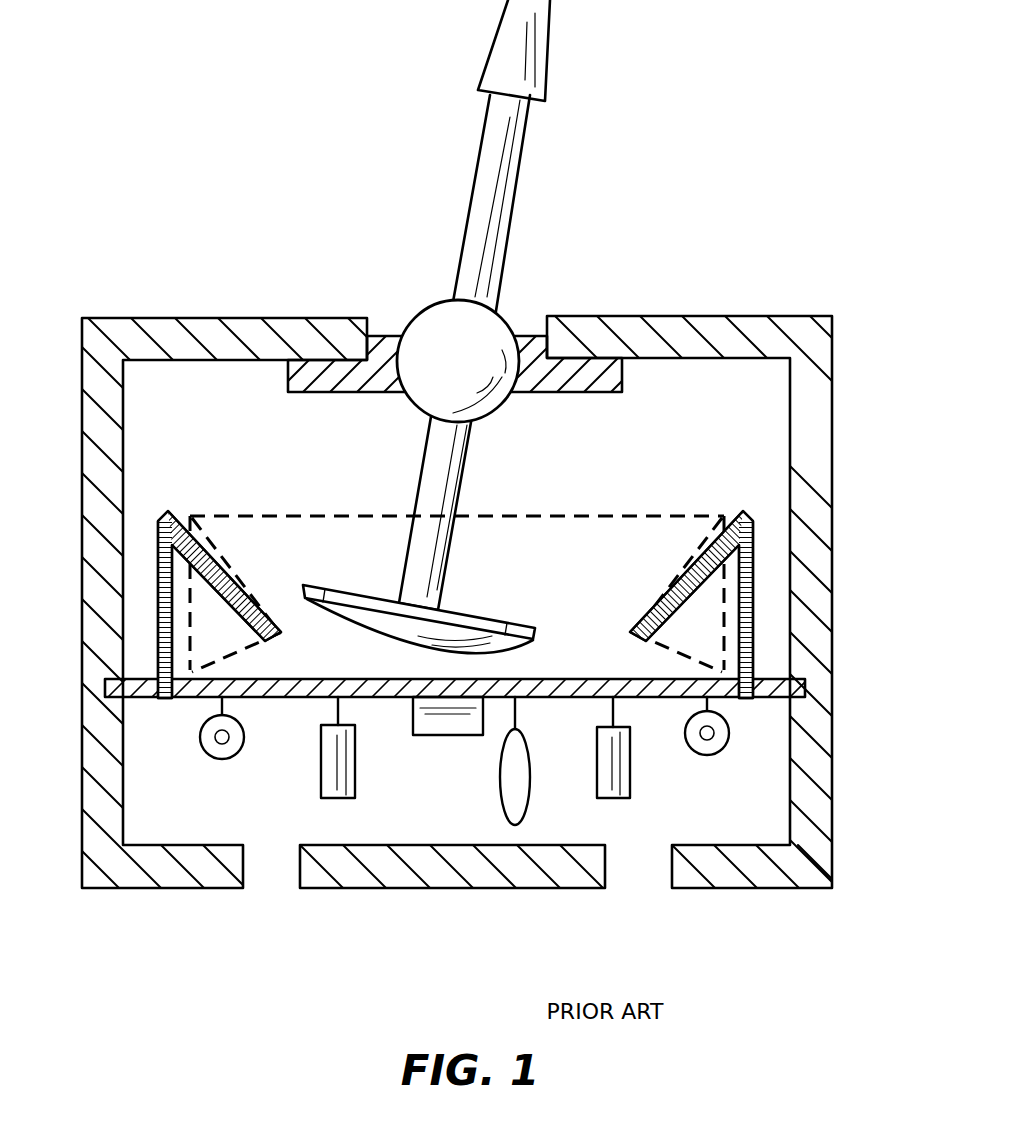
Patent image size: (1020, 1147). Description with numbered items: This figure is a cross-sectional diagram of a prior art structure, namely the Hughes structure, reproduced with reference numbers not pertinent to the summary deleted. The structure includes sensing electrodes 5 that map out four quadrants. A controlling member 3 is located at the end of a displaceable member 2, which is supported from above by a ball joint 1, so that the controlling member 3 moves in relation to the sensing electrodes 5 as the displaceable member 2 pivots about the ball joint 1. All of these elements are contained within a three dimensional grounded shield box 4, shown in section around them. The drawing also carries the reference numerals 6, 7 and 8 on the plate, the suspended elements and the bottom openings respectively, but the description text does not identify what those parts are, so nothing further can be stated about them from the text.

The ball joint 1 is at (435, 328).
The displaceable member 2 is at (428, 495).
The controlling member 3 is at (503, 620).
The grounded shield box 4 is at (822, 388).
The sensing electrodes 5 is at (753, 605).
The plate 6 is at (805, 686).
The suspended elements 7 is at (500, 775).
The bottom openings 8 is at (270, 865).